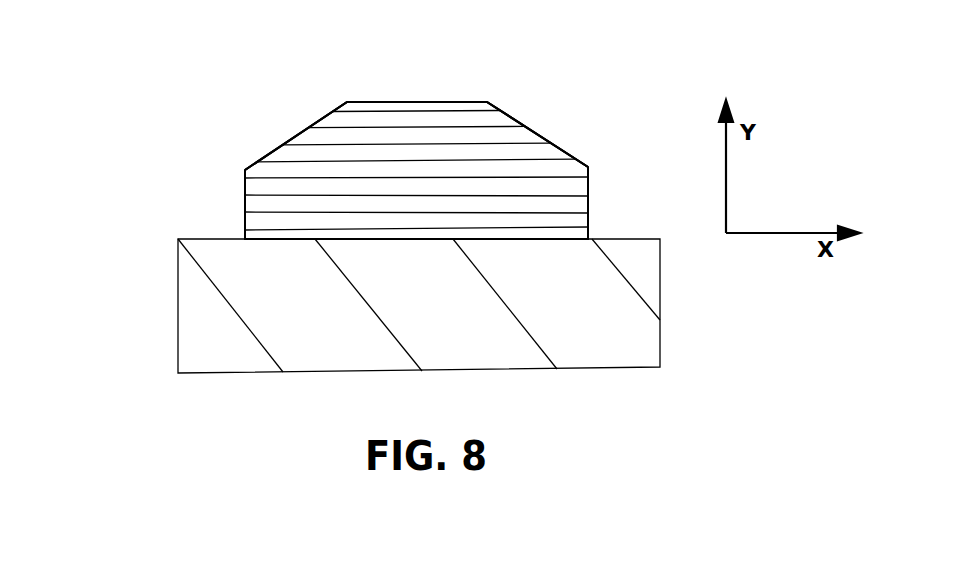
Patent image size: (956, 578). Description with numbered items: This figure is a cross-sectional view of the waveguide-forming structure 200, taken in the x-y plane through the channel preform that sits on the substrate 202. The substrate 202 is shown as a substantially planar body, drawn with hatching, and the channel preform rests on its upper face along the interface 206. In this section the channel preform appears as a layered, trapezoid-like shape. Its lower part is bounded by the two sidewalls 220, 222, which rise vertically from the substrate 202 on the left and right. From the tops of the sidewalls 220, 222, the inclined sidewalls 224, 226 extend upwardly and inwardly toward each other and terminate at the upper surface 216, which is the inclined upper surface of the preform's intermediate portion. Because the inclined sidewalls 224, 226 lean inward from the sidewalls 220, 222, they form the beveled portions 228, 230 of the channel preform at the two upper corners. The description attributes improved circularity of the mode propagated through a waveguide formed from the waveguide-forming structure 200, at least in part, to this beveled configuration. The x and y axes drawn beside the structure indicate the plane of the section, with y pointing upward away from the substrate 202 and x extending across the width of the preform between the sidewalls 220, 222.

The waveguide-forming structure 200 is at (146, 52).
The substrate 202 is at (178, 328).
The bottom surface / interface with substrate 206 is at (332, 232).
The upper surface 216 is at (382, 100).
The sidewall 220 is at (243, 225).
The sidewall 222 is at (590, 222).
The inclined sidewall 224 is at (282, 147).
The inclined sidewall 226 is at (553, 138).
The beveled portion 228 is at (265, 106).
The beveled portion 230 is at (558, 93).